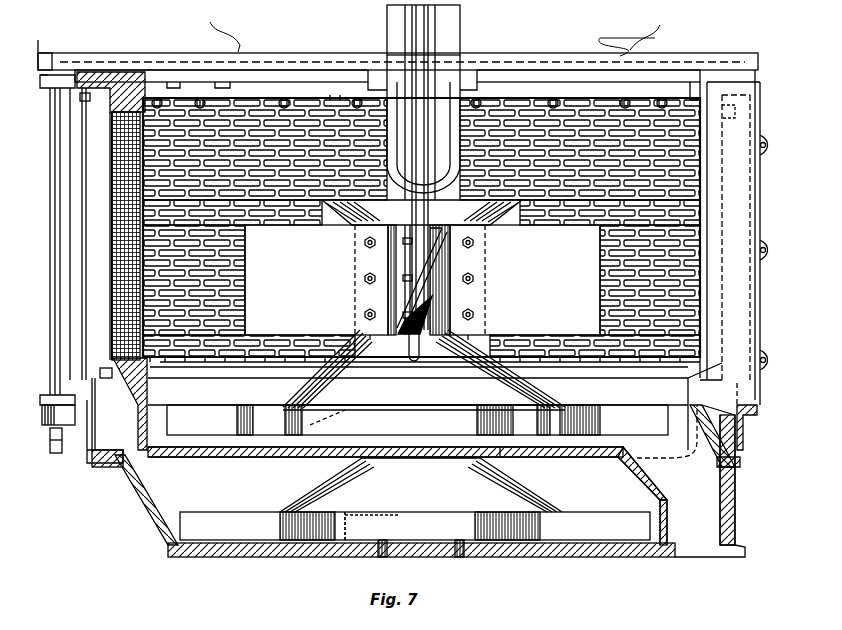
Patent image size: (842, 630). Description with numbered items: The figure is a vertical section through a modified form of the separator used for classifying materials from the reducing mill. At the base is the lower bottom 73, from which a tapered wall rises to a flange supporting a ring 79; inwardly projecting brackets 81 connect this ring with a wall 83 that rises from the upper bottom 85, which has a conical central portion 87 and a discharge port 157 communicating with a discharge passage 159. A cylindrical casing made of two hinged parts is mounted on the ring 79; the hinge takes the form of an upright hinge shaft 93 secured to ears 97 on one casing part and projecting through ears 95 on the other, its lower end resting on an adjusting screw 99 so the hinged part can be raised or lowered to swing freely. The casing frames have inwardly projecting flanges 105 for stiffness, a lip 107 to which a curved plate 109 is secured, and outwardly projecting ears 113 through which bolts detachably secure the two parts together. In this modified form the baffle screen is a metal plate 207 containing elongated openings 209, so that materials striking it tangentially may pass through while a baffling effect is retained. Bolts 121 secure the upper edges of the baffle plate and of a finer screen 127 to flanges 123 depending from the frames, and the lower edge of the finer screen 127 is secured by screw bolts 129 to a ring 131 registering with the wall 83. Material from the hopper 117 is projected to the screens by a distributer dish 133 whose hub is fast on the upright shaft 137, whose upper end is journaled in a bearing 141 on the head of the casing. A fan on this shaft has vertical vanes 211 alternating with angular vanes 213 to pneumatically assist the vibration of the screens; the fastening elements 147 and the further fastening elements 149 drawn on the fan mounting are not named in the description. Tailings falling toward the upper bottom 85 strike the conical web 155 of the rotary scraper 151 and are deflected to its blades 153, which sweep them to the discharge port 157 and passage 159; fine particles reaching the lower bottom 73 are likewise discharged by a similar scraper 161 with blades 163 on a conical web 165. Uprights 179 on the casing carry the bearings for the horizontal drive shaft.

The lower bottom 73 is at (300, 557).
The ring 79 is at (748, 442).
The brackets 81 is at (100, 460).
The wall 83 is at (128, 468).
The upper bottom 85 is at (198, 457).
The conical central portion 87 is at (500, 449).
The hinge shaft 93 is at (57, 255).
The ears 95 is at (45, 83).
The ears 97 is at (45, 53).
The adjusting screw 99 is at (52, 454).
The flanges 105 is at (745, 208).
The lip 107 is at (83, 97).
The curved plate 109 is at (80, 147).
The ears 113 is at (768, 146).
The hopper 117 is at (438, 90).
The bolts 121 is at (157, 98).
The flanges 123 is at (125, 72).
The finer screen 127 is at (112, 228).
The screw bolts 129 is at (110, 378).
The ring 131 is at (112, 385).
The dish 133 is at (422, 212).
The upright shaft 137 is at (432, 40).
The bearing 141 is at (432, 12).
The bolt 147 is at (365, 278).
The bolt 149 is at (510, 320).
The rotary scraper 151 is at (270, 418).
The blades 153 is at (198, 406).
The conical web 155 is at (322, 386).
The discharge port 157 is at (668, 462).
The discharge passage 159 is at (728, 500).
The scraper 161 is at (305, 494).
The blades 163 is at (226, 522).
The conical web 165 is at (333, 484).
The uprights 179 is at (218, 42).
The metal plate 207 is at (285, 100).
The elongated openings 209 is at (336, 100).
The vertical vanes 211 is at (422, 280).
The angular vanes 213 is at (435, 242).